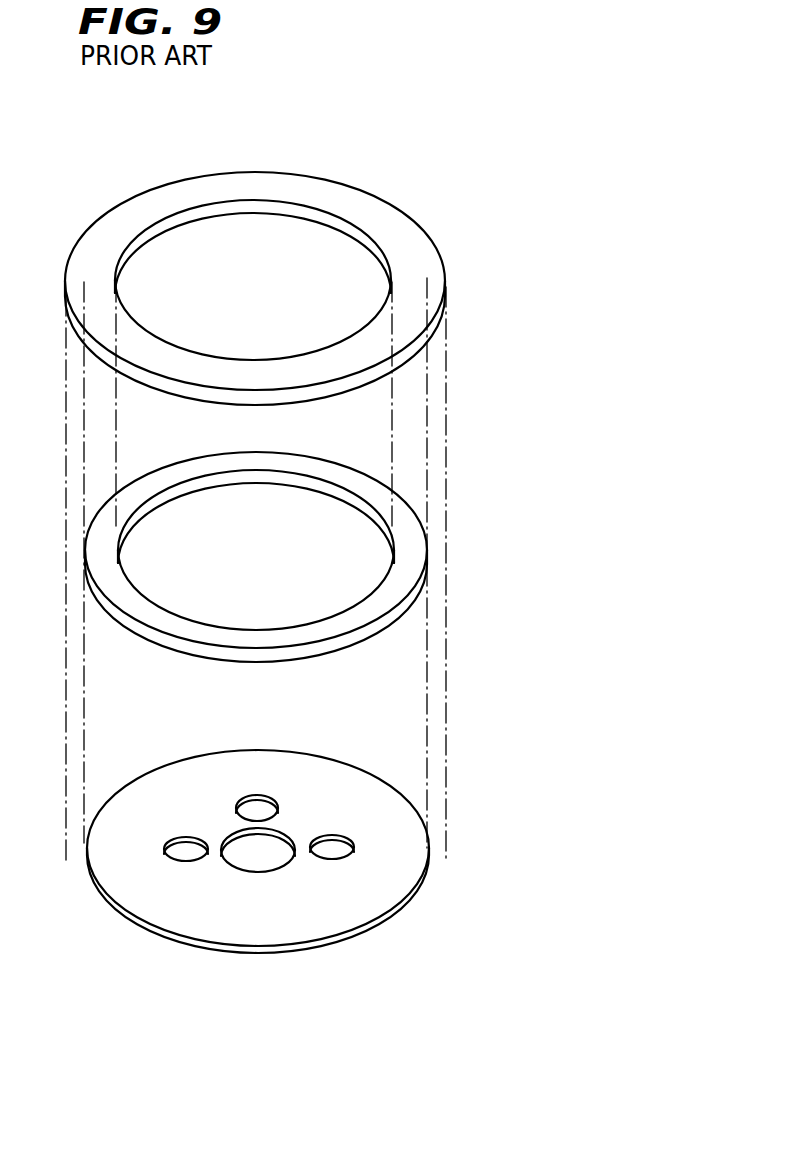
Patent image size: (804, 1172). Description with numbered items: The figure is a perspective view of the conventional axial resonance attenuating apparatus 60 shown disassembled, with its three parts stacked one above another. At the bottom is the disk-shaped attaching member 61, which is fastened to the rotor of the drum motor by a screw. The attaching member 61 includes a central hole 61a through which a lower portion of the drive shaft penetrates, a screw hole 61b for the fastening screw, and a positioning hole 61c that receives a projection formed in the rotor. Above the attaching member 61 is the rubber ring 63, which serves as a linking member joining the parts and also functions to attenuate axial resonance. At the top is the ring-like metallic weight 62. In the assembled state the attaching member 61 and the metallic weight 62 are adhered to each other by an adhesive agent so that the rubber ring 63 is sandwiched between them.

The axial resonance attenuating apparatus 60 is at (308, 158).
The attaching member 61 is at (402, 857).
The hole 61a is at (267, 862).
The screw hole 61b is at (177, 863).
The positioning hole 61c is at (272, 806).
The metallic weight 62 is at (410, 262).
The rubber ring 63 is at (380, 597).